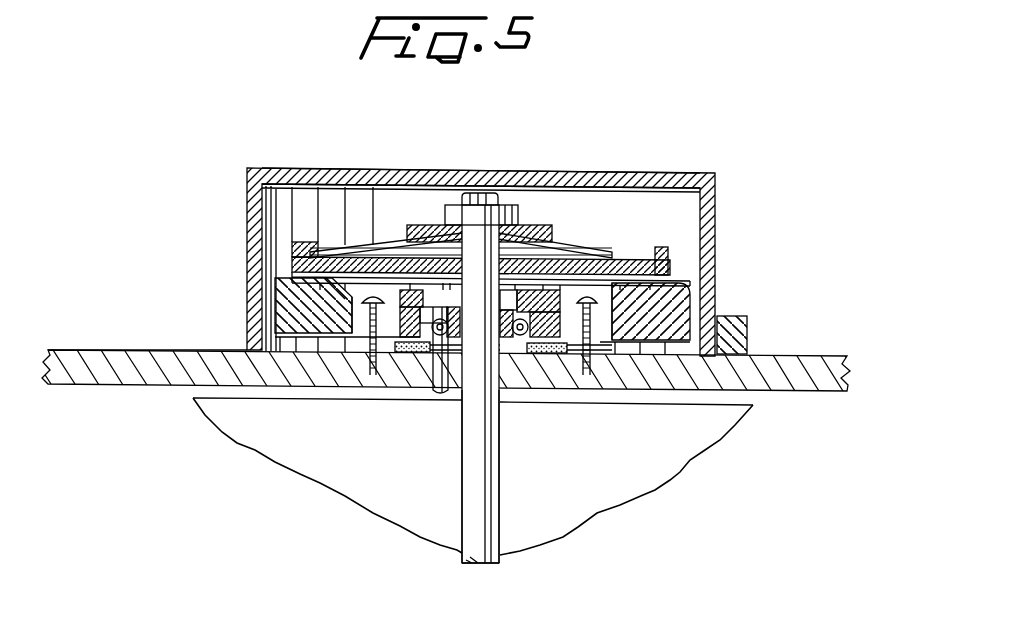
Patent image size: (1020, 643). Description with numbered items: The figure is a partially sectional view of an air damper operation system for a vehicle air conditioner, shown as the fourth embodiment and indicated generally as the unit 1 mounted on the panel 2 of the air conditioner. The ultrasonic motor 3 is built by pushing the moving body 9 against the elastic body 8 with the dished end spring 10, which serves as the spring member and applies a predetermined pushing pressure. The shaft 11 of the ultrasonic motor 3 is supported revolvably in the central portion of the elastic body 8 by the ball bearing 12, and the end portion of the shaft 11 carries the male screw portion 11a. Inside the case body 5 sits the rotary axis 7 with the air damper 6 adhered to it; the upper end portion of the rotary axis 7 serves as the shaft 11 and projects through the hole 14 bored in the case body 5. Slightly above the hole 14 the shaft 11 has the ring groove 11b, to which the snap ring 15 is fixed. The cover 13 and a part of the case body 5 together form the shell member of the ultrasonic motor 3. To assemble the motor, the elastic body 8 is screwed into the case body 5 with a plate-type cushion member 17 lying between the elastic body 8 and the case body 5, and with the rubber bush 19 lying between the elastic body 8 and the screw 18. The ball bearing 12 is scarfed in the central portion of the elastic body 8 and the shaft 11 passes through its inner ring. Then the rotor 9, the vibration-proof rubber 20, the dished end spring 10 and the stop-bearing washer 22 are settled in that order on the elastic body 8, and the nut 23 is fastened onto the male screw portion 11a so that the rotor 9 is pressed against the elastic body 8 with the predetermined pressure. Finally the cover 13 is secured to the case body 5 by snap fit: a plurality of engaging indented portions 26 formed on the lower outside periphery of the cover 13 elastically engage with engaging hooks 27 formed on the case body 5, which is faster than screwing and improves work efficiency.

The suspension unit 1 is at (682, 141).
The mounting plate 2 is at (805, 353).
The ultrasonic motor 3 is at (247, 204).
The case body 5 is at (121, 350).
The air damper 6 is at (225, 399).
The rotary axis 7 is at (489, 566).
The elastic body 8 is at (345, 305).
The moving body 9 is at (672, 272).
The dished end spring 10 is at (665, 182).
The shaft 11 is at (471, 265).
The male screw portion 11a is at (482, 200).
The ring groove 11b is at (497, 430).
The ball bearing 12 is at (455, 392).
The cover 13 is at (260, 242).
The hole 14 is at (440, 392).
The snap ring 15 is at (521, 353).
The cushion member 17 is at (576, 342).
The screw 18 is at (297, 297).
The rubber bush 19 is at (330, 315).
The vibration-proof rubber 20 is at (670, 249).
The stop-bearing washer 22 is at (580, 243).
The nut 23 is at (514, 224).
The engaging indented portions 26 is at (753, 405).
The engaging hooks 27 is at (748, 333).